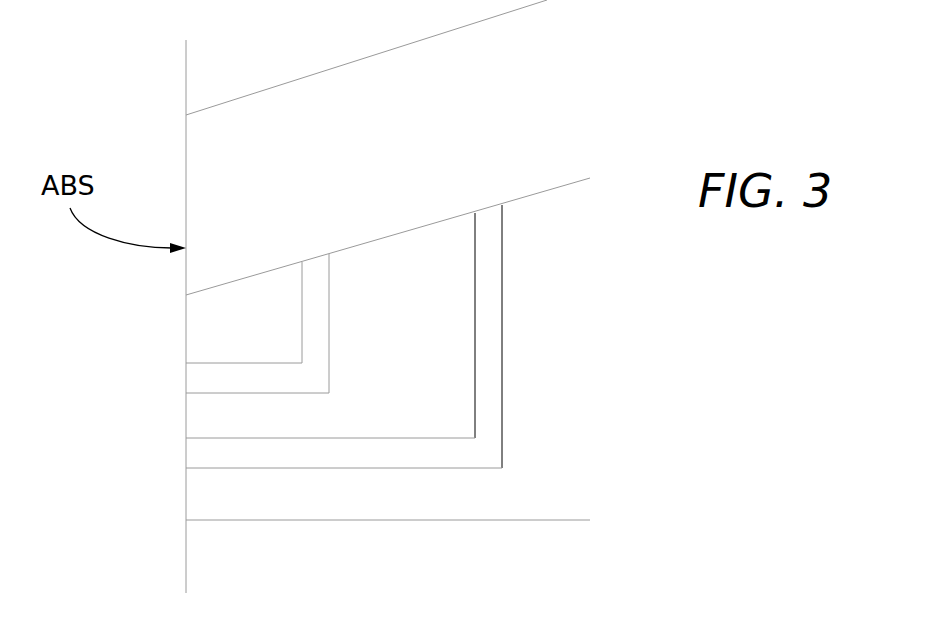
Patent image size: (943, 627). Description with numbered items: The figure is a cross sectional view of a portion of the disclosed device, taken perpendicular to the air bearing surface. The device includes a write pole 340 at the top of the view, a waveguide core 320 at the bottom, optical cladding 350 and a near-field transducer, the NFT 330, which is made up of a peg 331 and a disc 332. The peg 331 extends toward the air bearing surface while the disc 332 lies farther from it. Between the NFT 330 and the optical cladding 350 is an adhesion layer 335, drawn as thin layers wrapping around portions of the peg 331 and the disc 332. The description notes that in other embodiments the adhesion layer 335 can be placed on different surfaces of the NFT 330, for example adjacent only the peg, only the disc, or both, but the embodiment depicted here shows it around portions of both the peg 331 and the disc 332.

The waveguide core 320 is at (318, 590).
The NFT 330 is at (428, 376).
The peg 331 is at (230, 422).
The disc 332 is at (428, 296).
The adhesion layer 335 is at (227, 373).
The write pole 340 is at (428, 104).
The optical cladding 350 is at (567, 360).